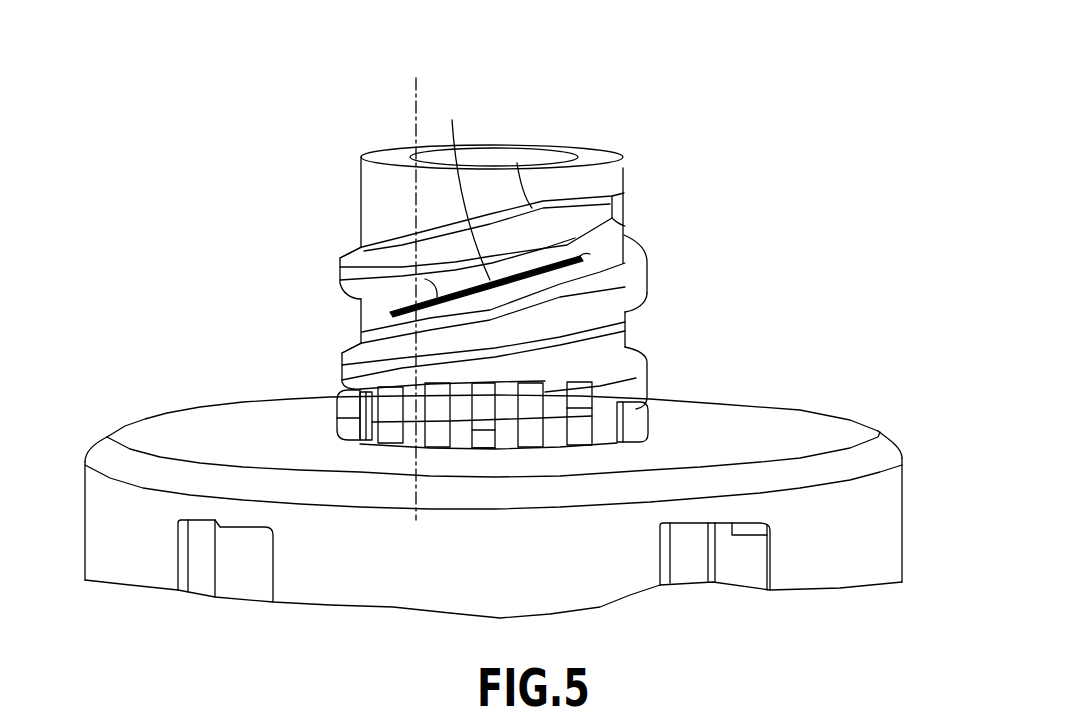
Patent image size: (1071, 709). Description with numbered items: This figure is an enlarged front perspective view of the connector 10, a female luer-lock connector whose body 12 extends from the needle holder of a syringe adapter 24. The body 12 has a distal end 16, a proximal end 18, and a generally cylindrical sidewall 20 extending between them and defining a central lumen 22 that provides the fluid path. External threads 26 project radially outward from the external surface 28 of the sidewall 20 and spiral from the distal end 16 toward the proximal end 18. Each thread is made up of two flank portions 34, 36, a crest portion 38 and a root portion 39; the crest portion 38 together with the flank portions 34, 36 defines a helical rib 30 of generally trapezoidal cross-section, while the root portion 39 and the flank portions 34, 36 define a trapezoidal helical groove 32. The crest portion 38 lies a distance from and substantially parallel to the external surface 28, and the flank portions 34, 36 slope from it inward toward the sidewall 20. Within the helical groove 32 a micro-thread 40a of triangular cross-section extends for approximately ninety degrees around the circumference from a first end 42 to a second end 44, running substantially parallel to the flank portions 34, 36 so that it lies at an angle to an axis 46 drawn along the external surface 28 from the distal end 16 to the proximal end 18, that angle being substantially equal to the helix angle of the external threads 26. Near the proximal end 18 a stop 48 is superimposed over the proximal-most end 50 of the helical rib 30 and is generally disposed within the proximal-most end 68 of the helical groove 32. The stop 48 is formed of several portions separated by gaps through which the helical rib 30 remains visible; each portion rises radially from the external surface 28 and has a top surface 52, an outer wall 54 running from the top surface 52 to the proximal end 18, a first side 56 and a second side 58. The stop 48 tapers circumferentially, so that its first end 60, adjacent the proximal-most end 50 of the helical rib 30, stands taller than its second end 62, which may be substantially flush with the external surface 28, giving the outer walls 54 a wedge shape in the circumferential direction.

The connector 10 is at (703, 73).
The body 12 is at (455, 202).
The distal end 16 is at (593, 148).
The proximal end 18 is at (603, 447).
The sidewall 20 is at (360, 181).
The central lumen 22 is at (484, 153).
The syringe adapter 24 is at (907, 490).
The external threads 26 is at (648, 273).
The external surface 28 is at (357, 208).
The helical rib 30 is at (638, 296).
The helical groove 32 is at (612, 334).
The flank portion 34 is at (517, 163).
The flank portion 36 is at (627, 246).
The crest portion 38 is at (573, 210).
The root portion 39 is at (620, 223).
The micro-thread 40a is at (461, 186).
The first end 42 is at (392, 317).
The second end 44 is at (627, 260).
The axis 46 is at (412, 87).
The stop 48 is at (483, 458).
The proximal-most end 50 is at (393, 448).
The top surface 52 is at (482, 392).
The outer wall 54 is at (482, 432).
The first side 56 is at (483, 362).
The second side 58 is at (516, 405).
The first end 60 is at (337, 427).
The second end 62 is at (648, 406).
The proximal-most end 68 is at (350, 427).